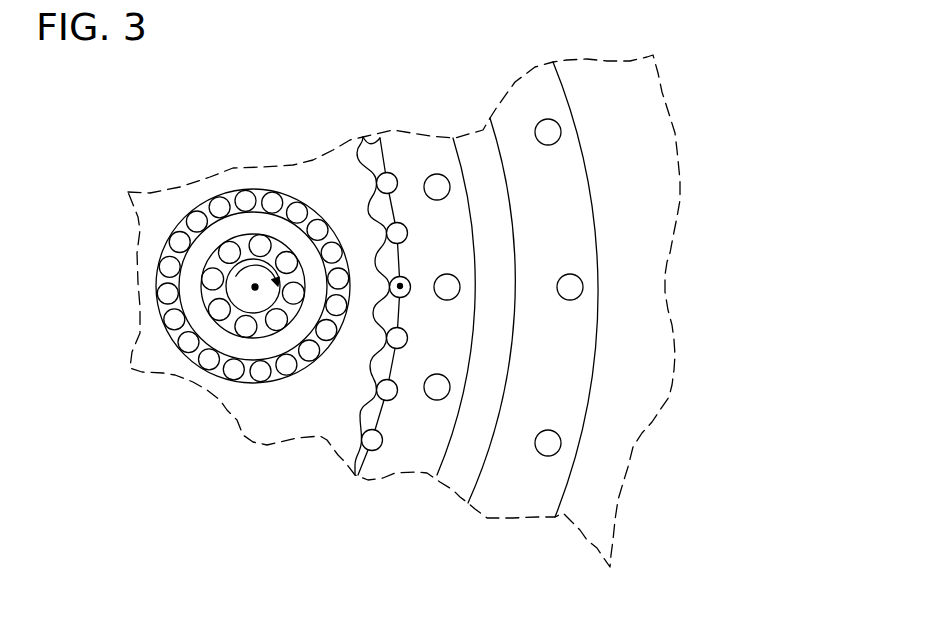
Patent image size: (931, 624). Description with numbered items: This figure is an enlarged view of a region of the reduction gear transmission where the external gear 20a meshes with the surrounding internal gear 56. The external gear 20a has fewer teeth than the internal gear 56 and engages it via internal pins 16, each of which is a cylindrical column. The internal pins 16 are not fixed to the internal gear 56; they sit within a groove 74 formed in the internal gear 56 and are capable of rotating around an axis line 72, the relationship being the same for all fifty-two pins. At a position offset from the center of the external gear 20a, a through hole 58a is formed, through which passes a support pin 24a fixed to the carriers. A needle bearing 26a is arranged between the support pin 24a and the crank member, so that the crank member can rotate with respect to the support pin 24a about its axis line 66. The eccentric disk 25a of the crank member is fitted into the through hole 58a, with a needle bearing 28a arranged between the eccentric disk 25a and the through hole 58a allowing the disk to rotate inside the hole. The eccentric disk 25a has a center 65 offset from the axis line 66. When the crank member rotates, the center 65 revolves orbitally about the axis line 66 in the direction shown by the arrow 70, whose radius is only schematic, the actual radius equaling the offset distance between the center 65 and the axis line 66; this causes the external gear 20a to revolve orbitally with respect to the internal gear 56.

The internal pin 16 is at (576, 306).
The external gear 20a is at (404, 311).
The support pin 24a is at (246, 224).
The eccentric disk 25a is at (482, 245).
The needle bearing 26a is at (262, 375).
The needle bearing 28a is at (262, 363).
The internal gear 56 is at (505, 278).
The through hole 58a is at (470, 297).
The center of eccentric disk 65 is at (207, 344).
The axis line of support pin 66 is at (260, 410).
The arrow 70 is at (305, 177).
The axis line of internal pin 72 is at (597, 304).
The groove 74 is at (568, 312).